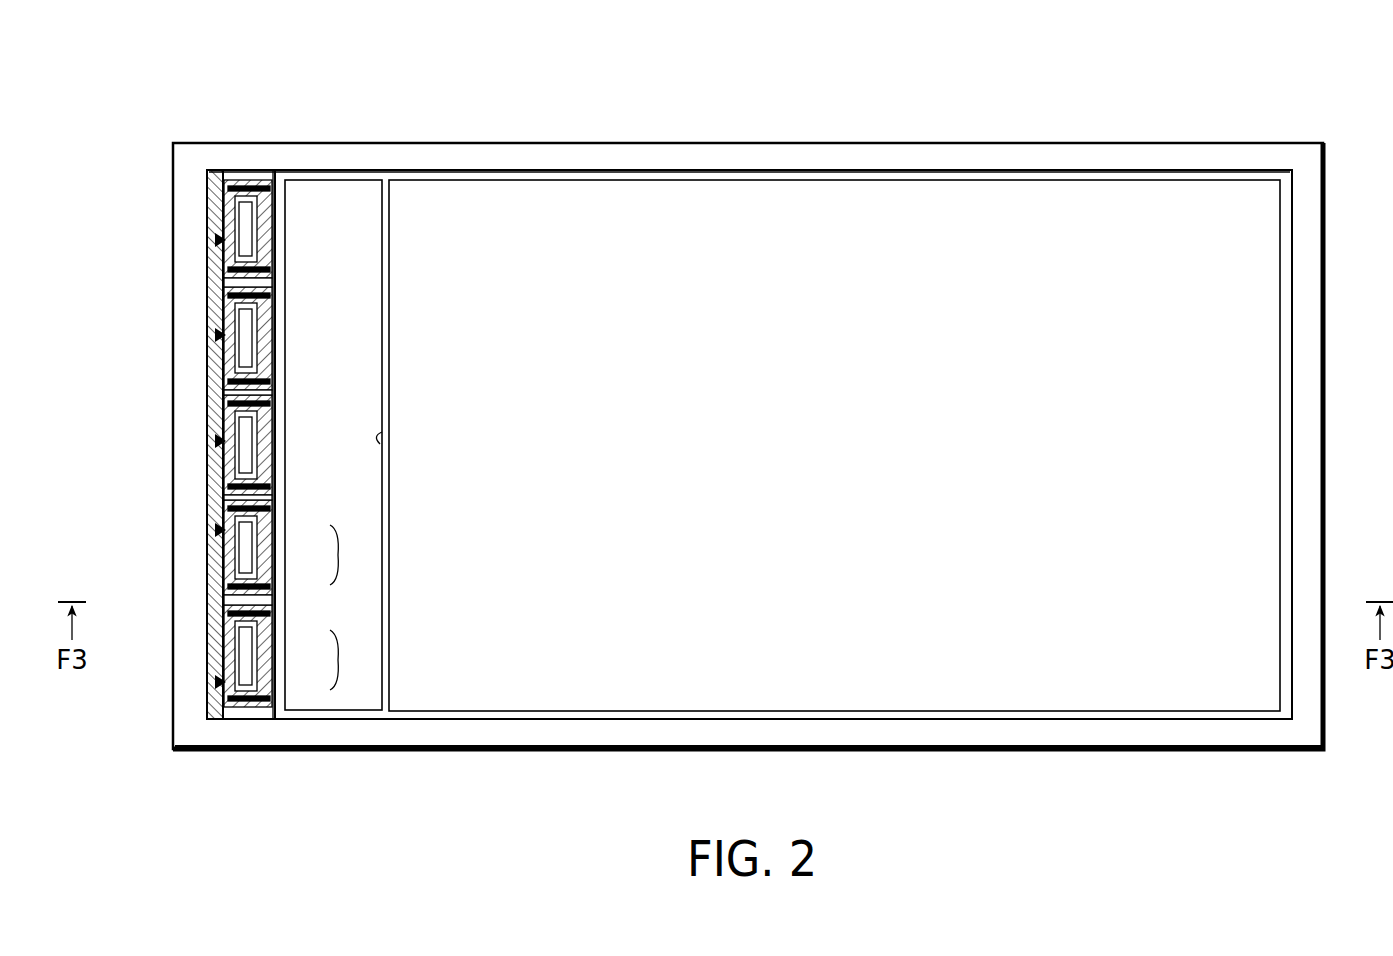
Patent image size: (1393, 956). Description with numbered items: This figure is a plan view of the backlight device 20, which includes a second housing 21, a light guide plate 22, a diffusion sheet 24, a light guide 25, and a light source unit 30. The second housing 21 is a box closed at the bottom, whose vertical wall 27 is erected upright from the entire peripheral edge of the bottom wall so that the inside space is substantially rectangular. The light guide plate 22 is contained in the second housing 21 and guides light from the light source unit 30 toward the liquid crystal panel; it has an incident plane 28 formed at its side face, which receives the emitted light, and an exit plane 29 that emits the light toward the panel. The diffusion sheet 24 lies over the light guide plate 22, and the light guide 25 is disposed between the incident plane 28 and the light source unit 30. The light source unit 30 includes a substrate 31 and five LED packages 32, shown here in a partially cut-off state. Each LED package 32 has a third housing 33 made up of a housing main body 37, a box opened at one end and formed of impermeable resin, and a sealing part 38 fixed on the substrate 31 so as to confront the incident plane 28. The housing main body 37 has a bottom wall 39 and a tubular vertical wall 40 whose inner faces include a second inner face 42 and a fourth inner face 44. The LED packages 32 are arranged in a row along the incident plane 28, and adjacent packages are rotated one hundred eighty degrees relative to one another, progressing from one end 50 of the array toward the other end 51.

The backlight device 20 is at (821, 116).
The second housing 21 is at (1205, 150).
The light guide plate 22 is at (1247, 336).
The diffusion sheet 24 is at (1002, 207).
The light guide 25 is at (354, 712).
The vertical wall 27 is at (957, 745).
The incident plane 28 is at (382, 438).
The exit plane 29 is at (626, 207).
The light source unit 30 is at (245, 442).
The substrate 31 is at (212, 192).
The LED package 32 is at (230, 176).
The third housing 33 is at (352, 607).
The housing main body 37 is at (262, 270).
The sealing part 38 is at (268, 205).
The bottom wall 39 is at (222, 481).
The vertical wall 40 is at (226, 392).
The second inner face 42 is at (254, 200).
The fourth inner face 44 is at (268, 212).
The one end 50 is at (245, 176).
The other end 51 is at (244, 716).